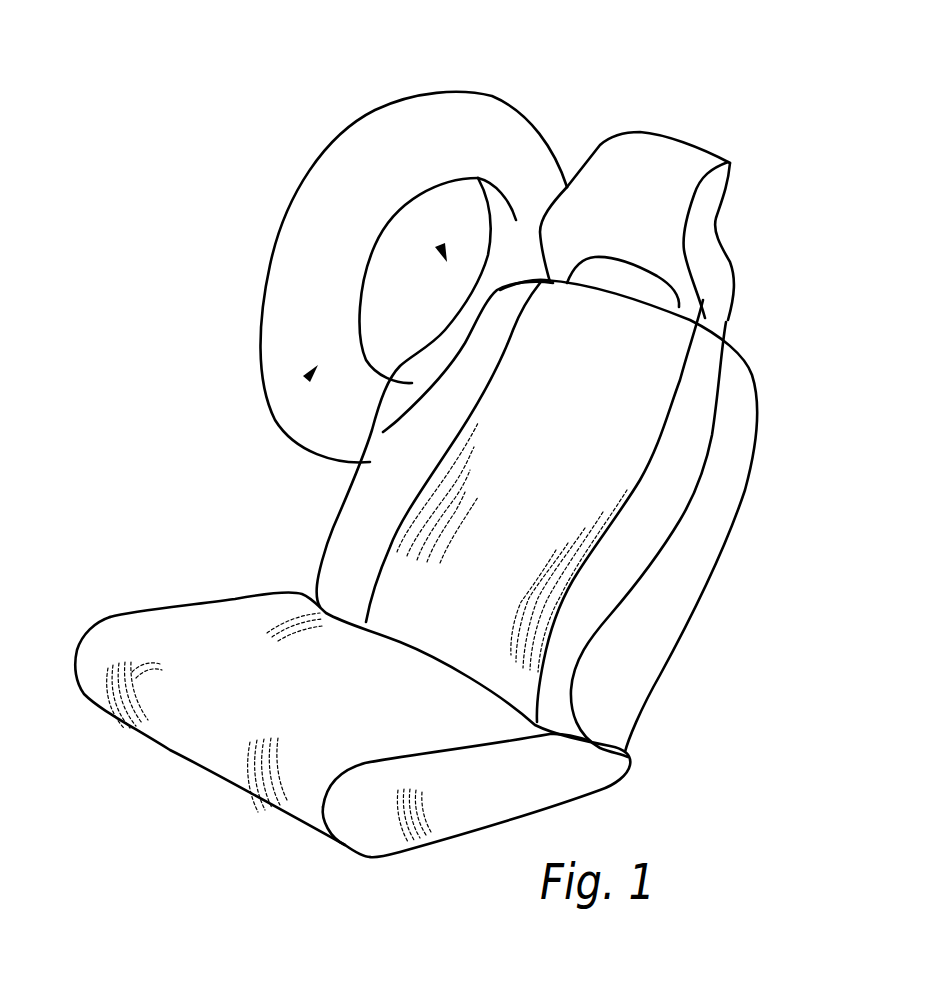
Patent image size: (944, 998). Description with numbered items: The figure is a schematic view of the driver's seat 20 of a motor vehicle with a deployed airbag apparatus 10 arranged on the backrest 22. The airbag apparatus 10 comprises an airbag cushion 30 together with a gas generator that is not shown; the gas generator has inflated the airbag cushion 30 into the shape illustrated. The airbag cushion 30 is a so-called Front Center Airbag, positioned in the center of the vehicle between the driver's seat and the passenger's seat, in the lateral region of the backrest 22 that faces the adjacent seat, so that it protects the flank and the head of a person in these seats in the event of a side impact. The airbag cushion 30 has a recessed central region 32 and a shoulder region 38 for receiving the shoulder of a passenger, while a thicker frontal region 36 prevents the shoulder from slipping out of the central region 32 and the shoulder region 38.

The airbag apparatus 10 is at (250, 94).
The driver's seat 20 is at (172, 630).
The backrest 22 is at (663, 357).
The airbag cushion 30 is at (322, 235).
The central region 32 is at (396, 280).
The frontal region 36 is at (303, 383).
The shoulder region 38 is at (446, 258).